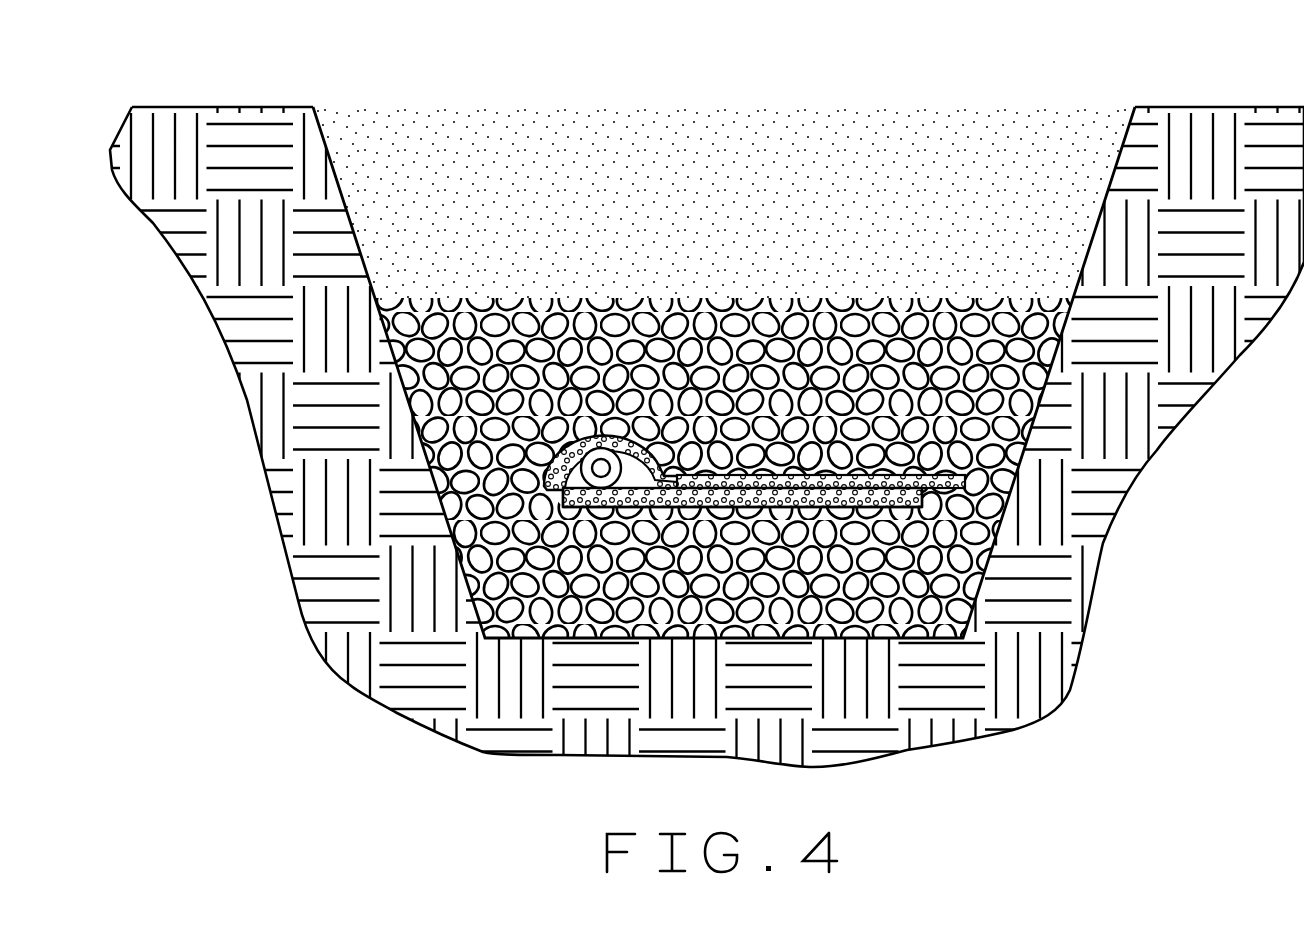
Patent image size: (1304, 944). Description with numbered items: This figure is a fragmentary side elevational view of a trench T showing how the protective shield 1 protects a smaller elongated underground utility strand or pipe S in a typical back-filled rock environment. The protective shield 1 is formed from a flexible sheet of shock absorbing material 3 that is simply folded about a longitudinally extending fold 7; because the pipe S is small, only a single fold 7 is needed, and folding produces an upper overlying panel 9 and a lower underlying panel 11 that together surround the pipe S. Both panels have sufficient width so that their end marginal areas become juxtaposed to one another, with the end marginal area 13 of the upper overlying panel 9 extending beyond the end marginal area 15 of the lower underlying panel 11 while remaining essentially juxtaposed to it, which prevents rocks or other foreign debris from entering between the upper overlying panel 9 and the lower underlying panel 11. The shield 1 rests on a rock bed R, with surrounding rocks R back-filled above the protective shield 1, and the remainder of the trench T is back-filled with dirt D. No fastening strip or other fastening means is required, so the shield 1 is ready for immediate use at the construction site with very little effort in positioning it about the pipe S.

The protective shield 1 is at (736, 431).
The flexible sheet of shock absorbing material 3 is at (766, 508).
The longitudinally extending fold 7 is at (667, 468).
The upper overlying panel 9 is at (850, 476).
The lower underlying panel 11 is at (858, 508).
The end marginal area of the upper overlying panel 13 is at (965, 477).
The end marginal area of the lower underlying panel 15 is at (925, 500).
The smaller elongated underground utility strand or pipe S is at (614, 478).
The rocks R is at (425, 418).
The dirt D is at (552, 155).
The trench T is at (1108, 190).